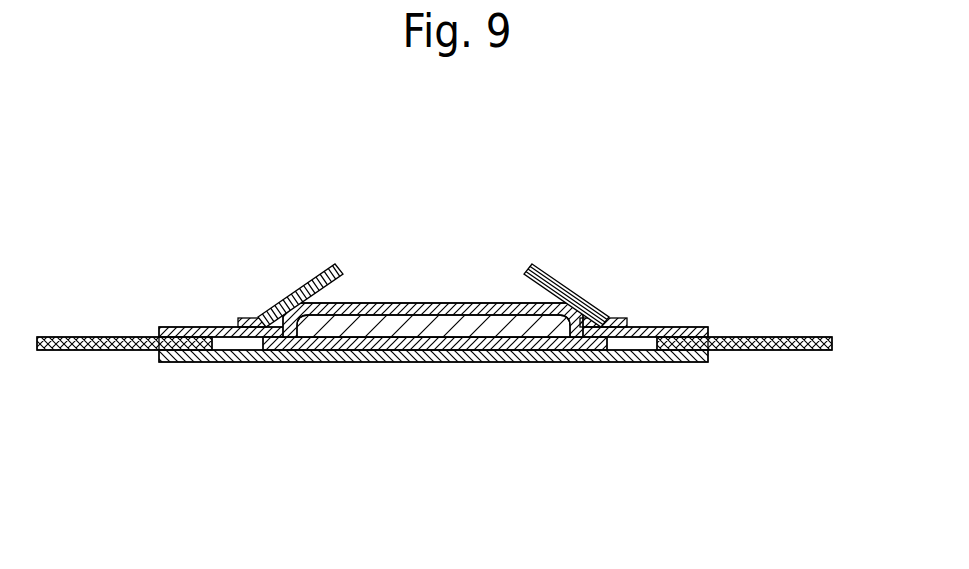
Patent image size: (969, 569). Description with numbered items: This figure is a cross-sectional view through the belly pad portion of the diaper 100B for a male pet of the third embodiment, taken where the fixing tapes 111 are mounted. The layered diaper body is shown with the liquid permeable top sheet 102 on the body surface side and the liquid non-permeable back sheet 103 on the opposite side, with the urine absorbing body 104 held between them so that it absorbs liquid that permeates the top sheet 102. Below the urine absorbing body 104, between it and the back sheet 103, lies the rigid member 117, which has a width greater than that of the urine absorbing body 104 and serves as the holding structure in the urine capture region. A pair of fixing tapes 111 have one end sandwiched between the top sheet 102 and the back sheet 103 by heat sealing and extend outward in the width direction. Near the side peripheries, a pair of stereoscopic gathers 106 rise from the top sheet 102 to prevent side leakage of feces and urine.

The diaper for a male pet 100B is at (478, 195).
The top sheet 102 is at (490, 303).
The back sheet 103 is at (365, 361).
The urine absorbing body 104 is at (415, 327).
The stereoscopic gathers 106 is at (337, 264).
The fixing tapes 111 is at (107, 350).
The rigid member 117 is at (285, 361).